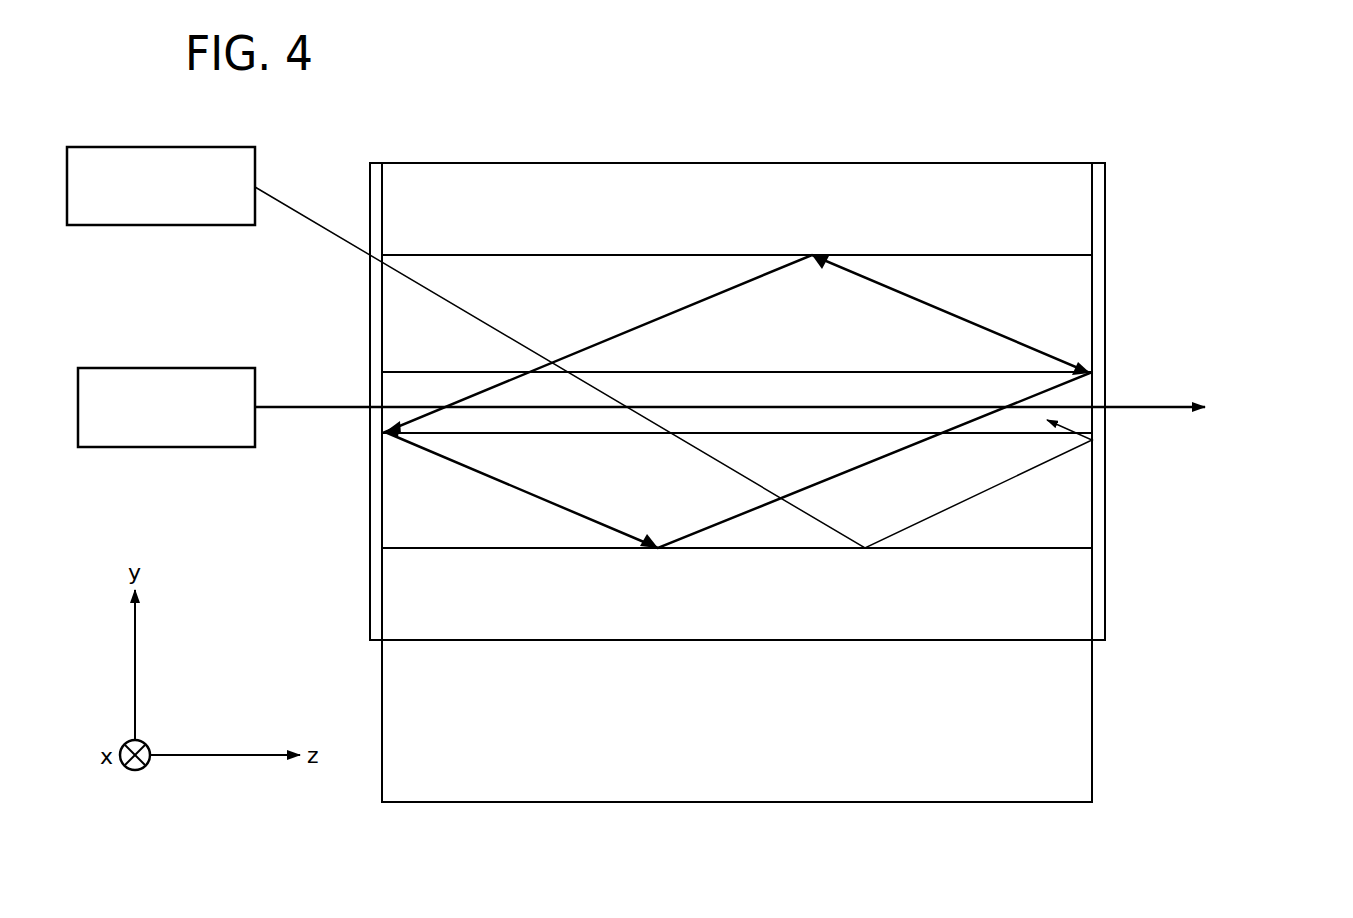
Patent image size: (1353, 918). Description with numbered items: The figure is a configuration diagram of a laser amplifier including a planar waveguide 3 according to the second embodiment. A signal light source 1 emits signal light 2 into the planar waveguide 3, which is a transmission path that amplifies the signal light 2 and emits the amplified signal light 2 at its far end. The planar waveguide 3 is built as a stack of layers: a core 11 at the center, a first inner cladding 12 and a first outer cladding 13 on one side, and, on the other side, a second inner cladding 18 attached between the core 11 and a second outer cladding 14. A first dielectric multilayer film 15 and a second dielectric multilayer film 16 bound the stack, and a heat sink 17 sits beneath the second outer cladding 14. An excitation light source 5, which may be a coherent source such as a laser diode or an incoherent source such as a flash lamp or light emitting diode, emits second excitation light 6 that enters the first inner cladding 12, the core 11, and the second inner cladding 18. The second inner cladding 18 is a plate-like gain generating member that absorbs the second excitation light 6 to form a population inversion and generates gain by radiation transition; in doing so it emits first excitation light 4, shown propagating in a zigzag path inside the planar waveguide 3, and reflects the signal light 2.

The signal light source 1 is at (216, 367).
The signal light 2 is at (290, 405).
The planar waveguide 3 is at (738, 806).
The first excitation light 4 is at (453, 400).
The excitation light source 5 is at (213, 147).
The second excitation light 6 is at (320, 226).
The core 11 is at (1075, 390).
The first inner cladding 12 is at (1075, 292).
The first outer cladding 13 is at (1075, 210).
The second outer cladding 14 is at (1075, 591).
The first dielectric multilayer film 15 is at (370, 185).
The second dielectric multilayer film 16 is at (1098, 176).
The heat sink 17 is at (1075, 718).
The second inner cladding 18 is at (1075, 525).